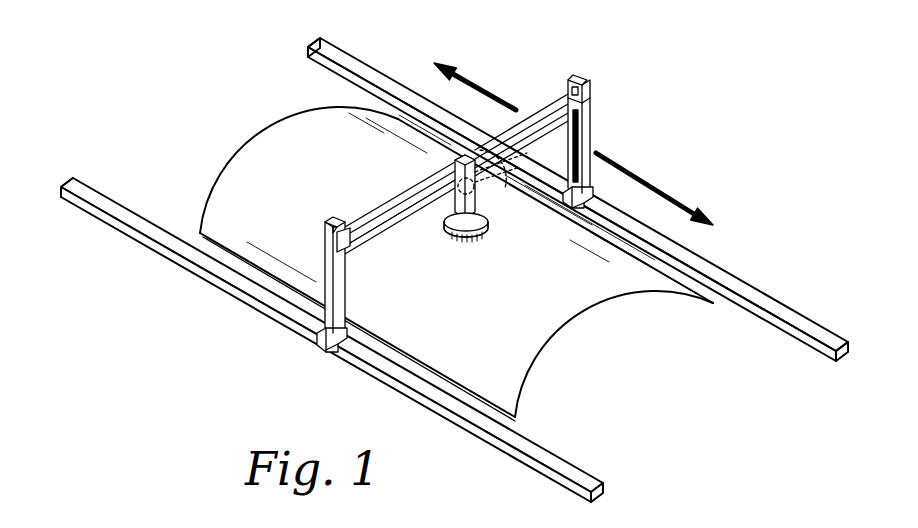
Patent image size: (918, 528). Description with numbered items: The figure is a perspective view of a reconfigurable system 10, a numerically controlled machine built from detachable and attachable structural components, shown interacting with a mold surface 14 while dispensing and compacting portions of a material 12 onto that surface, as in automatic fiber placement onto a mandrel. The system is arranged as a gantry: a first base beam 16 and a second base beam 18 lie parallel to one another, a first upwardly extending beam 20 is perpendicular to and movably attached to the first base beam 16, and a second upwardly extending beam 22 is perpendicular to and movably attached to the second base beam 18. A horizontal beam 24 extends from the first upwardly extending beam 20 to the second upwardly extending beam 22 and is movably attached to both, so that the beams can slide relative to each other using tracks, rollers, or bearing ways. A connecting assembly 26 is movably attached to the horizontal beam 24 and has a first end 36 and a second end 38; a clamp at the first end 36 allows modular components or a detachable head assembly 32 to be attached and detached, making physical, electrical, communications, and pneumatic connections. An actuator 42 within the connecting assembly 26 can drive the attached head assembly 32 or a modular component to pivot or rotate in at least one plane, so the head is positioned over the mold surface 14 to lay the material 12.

The reconfigurable system 10 is at (712, 70).
The material 12 is at (468, 243).
The mold surface 14 is at (456, 264).
The first base beam 16 is at (528, 463).
The second base beam 18 is at (790, 318).
The first upwardly extending beam 20 is at (327, 277).
The second upwardly extending beam 22 is at (594, 152).
The horizontal beam 24 is at (540, 110).
The connecting assembly 26 is at (424, 178).
The head assembly 32 is at (488, 226).
The first end 36 is at (446, 224).
The second end 38 is at (463, 153).
The actuator 42 is at (527, 153).